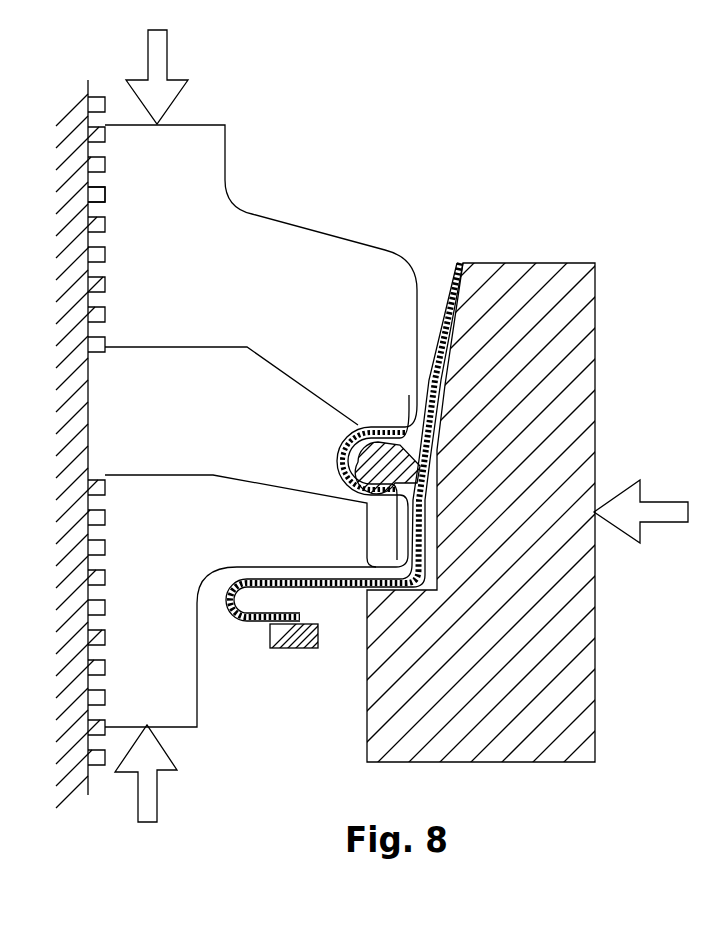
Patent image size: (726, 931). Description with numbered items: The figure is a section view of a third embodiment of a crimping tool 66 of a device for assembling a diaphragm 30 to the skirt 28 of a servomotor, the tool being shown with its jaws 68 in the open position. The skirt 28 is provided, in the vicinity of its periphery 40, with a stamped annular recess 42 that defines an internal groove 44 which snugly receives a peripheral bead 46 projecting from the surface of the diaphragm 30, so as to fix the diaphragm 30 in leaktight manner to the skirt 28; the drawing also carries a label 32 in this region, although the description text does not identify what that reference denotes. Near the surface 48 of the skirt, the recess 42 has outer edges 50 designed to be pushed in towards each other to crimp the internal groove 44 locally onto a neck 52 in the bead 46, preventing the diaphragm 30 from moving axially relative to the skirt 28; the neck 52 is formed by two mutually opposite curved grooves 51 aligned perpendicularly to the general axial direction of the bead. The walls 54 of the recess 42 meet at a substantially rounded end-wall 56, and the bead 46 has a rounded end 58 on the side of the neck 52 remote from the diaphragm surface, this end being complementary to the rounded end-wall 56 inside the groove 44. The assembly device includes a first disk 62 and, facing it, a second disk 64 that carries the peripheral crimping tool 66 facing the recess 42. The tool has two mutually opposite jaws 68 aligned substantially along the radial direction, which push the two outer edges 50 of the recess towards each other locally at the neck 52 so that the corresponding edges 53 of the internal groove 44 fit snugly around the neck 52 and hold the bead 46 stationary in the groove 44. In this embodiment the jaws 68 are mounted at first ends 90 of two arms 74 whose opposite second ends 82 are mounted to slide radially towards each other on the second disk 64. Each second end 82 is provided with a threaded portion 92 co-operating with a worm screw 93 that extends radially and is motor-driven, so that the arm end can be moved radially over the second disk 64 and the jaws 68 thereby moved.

The skirt 28 is at (451, 278).
The diaphragm 30 is at (470, 335).
The leg 32 is at (462, 372).
The periphery 40 is at (387, 588).
The stamped annular recess 42 is at (345, 422).
The internal groove 44 is at (346, 443).
The peripheral bead 46 is at (362, 472).
The surface of the skirt 48 is at (490, 262).
The outer edges 50 is at (370, 430).
The curved grooves 51 is at (430, 457).
The neck 52 is at (447, 472).
The edges of the internal groove 53 is at (438, 442).
The walls of the recess 54 is at (355, 418).
The rounded end-wall 56 is at (363, 497).
The rounded end 58 is at (337, 588).
The first disk 62 is at (535, 735).
The second disk 64 is at (90, 80).
The peripheral crimping tool 66 is at (258, 148).
The jaws 68 is at (420, 425).
The arms 74 is at (240, 303).
The second ends 82 is at (124, 253).
The first ends 90 is at (366, 303).
The threaded portion 92 is at (105, 212).
The worm screw 93 is at (90, 225).